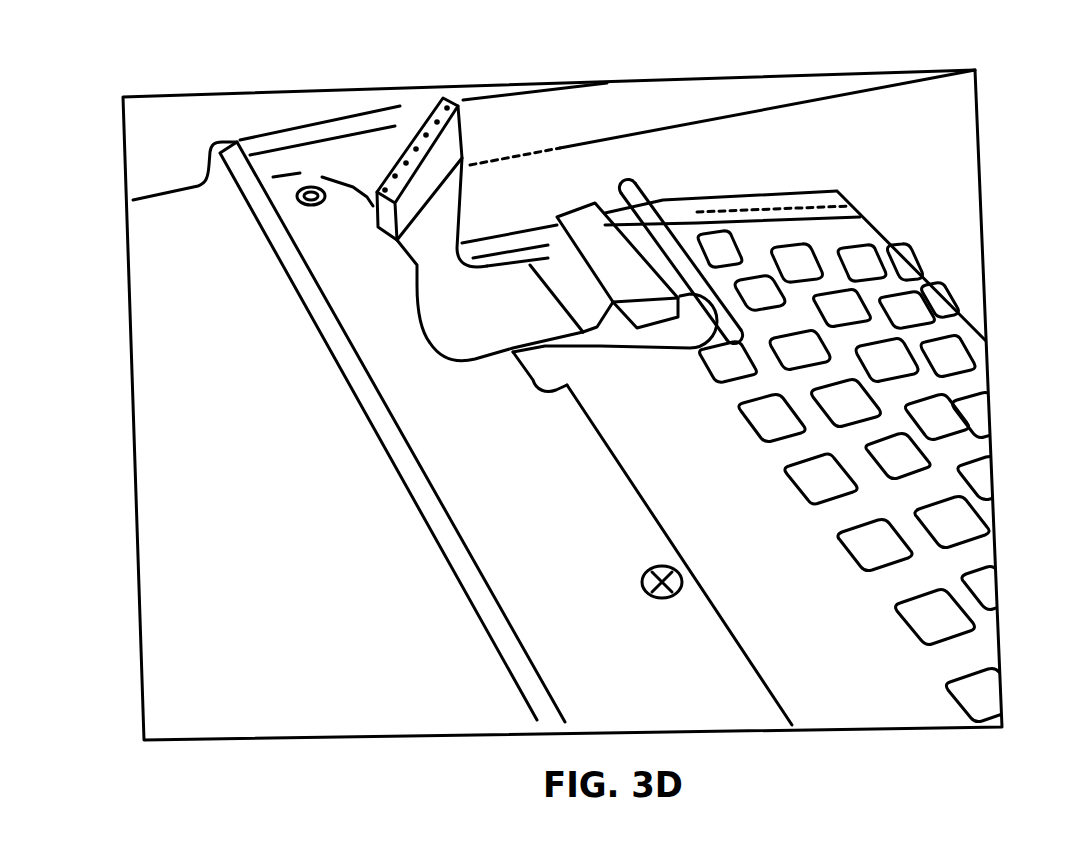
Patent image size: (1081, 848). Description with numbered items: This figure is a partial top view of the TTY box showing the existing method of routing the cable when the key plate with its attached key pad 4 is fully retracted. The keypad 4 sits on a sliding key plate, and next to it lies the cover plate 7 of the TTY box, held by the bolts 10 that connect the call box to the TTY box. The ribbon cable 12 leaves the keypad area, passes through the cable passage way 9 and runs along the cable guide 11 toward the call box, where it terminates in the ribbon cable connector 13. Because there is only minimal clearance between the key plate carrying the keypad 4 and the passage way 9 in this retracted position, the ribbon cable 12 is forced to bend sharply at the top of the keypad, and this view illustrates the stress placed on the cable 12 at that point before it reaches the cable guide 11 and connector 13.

The keypad 4 is at (960, 385).
The cover plate of TTY box 7 is at (167, 488).
The cable passage way 9 is at (632, 198).
The bolts connecting call box to TTY box 10 is at (314, 184).
The cable guide 11 is at (585, 235).
The ribbon cable 12 is at (602, 348).
The ribbon cable connector 13 is at (413, 135).